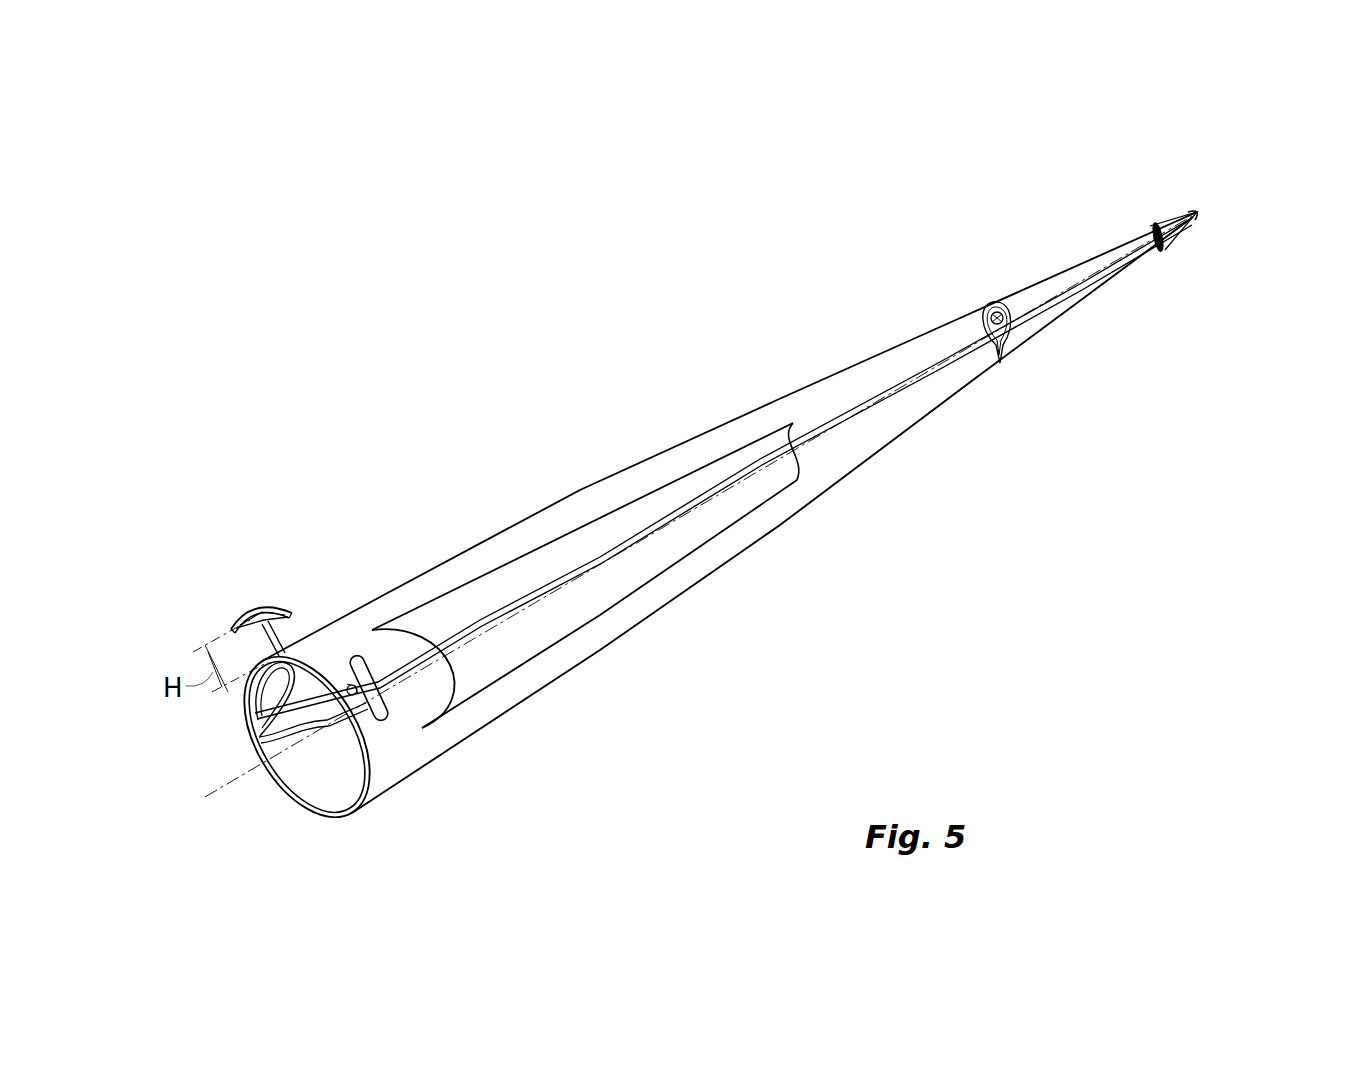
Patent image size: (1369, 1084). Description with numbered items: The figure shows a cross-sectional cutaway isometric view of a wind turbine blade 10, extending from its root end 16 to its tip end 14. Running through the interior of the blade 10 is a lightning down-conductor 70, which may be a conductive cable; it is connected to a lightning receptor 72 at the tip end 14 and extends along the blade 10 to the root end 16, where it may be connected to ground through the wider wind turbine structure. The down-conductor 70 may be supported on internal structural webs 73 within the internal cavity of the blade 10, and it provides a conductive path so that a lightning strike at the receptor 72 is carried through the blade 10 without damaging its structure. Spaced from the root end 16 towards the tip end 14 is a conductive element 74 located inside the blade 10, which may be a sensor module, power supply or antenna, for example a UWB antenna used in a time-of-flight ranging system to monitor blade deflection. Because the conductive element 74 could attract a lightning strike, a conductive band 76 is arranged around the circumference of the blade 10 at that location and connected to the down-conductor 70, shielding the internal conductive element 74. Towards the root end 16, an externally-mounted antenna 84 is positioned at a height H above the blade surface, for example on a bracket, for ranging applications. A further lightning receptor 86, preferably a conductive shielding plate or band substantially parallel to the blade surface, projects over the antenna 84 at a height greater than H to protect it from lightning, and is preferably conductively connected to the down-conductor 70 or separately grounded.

The blade 10 is at (860, 362).
The tip end 14 is at (1147, 186).
The root end 16 is at (268, 812).
The lightning down-conductor 70 is at (625, 555).
The lightning receptor 72 is at (1200, 217).
The internal structural webs 73 is at (665, 500).
The conductive element 74 is at (985, 340).
The conductive band 76 is at (1017, 330).
The externally-mounted antenna 84 is at (233, 614).
The lightning receptor 86 is at (263, 606).